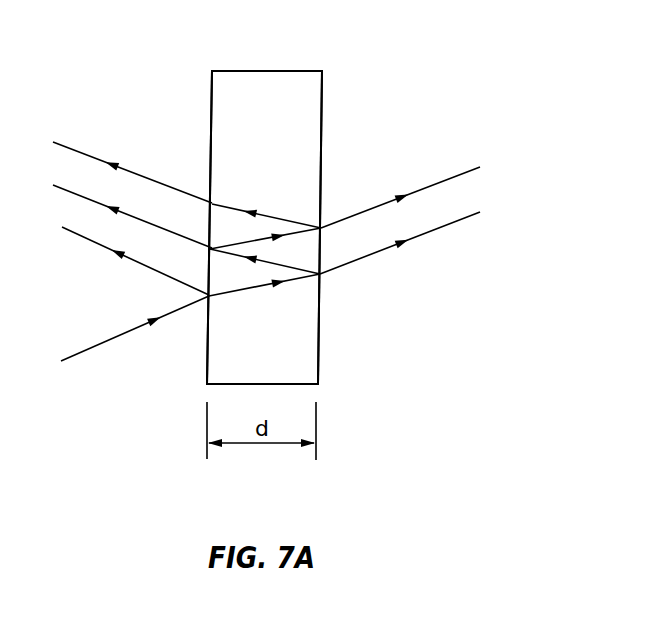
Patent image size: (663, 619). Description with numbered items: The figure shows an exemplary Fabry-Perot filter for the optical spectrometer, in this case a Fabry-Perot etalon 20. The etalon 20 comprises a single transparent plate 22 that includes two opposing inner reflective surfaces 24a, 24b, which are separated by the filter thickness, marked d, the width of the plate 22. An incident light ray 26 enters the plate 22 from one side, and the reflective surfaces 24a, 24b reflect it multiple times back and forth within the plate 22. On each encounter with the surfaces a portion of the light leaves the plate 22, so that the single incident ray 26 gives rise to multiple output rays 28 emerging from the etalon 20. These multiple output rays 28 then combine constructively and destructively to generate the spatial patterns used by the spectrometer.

The Fabry-Perot etalon 20 is at (480, 66).
The transparent plate 22 is at (287, 70).
The reflective surface 24a is at (212, 148).
The reflective surface 24b is at (320, 195).
The incident light ray 26 is at (88, 348).
The output rays 28 is at (363, 257).